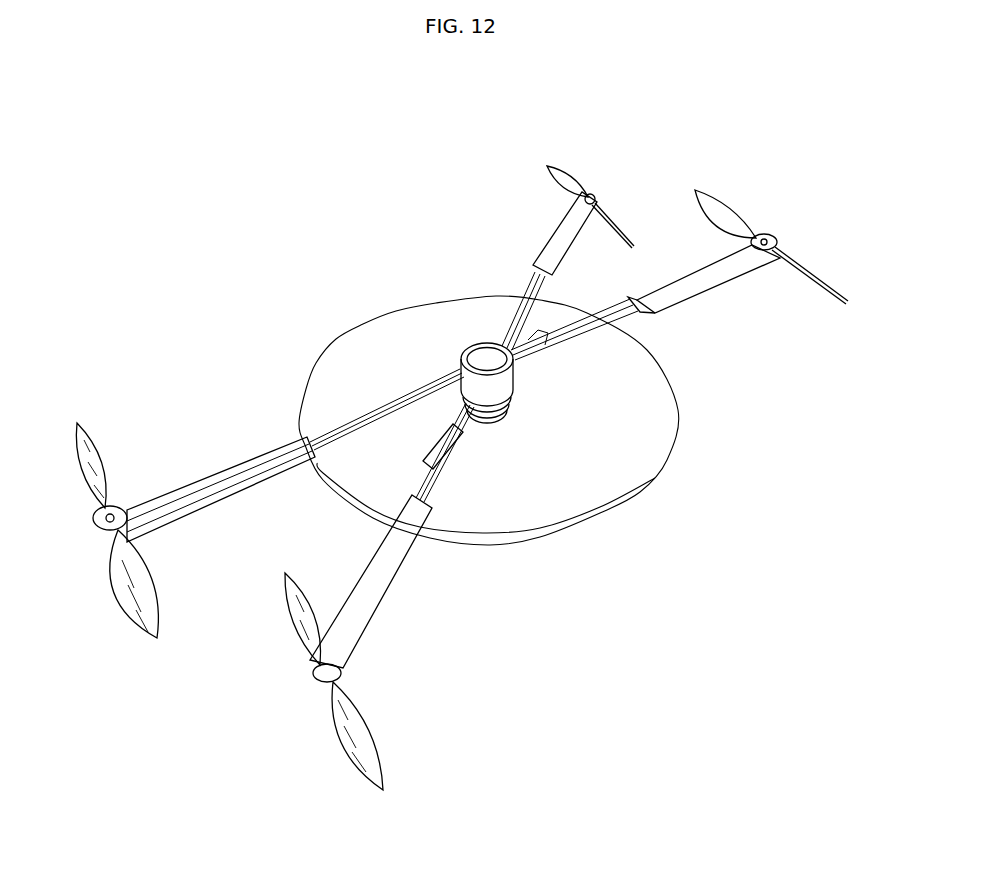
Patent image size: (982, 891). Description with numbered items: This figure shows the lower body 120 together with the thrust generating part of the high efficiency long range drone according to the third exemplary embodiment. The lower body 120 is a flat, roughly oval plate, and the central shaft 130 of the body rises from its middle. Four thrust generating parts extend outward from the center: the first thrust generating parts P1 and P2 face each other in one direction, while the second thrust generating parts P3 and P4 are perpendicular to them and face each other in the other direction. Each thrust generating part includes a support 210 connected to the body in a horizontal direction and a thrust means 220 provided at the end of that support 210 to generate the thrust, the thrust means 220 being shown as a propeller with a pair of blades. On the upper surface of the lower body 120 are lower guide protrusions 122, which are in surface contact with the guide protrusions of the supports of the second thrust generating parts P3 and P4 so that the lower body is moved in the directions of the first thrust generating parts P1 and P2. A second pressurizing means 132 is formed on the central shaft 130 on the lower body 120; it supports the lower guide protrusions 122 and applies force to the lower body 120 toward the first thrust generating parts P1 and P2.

The lower body 120 is at (550, 480).
The lower guide protrusions 122 is at (438, 466).
The central shaft 130 is at (512, 352).
The second pressurizing means 132 is at (513, 397).
The support 210 is at (181, 500).
The thrust means 220 is at (112, 503).
The first thrust generating part P1 is at (90, 563).
The first thrust generating part P2 is at (797, 231).
The second thrust generating part P3 is at (296, 685).
The second thrust generating part P4 is at (608, 178).